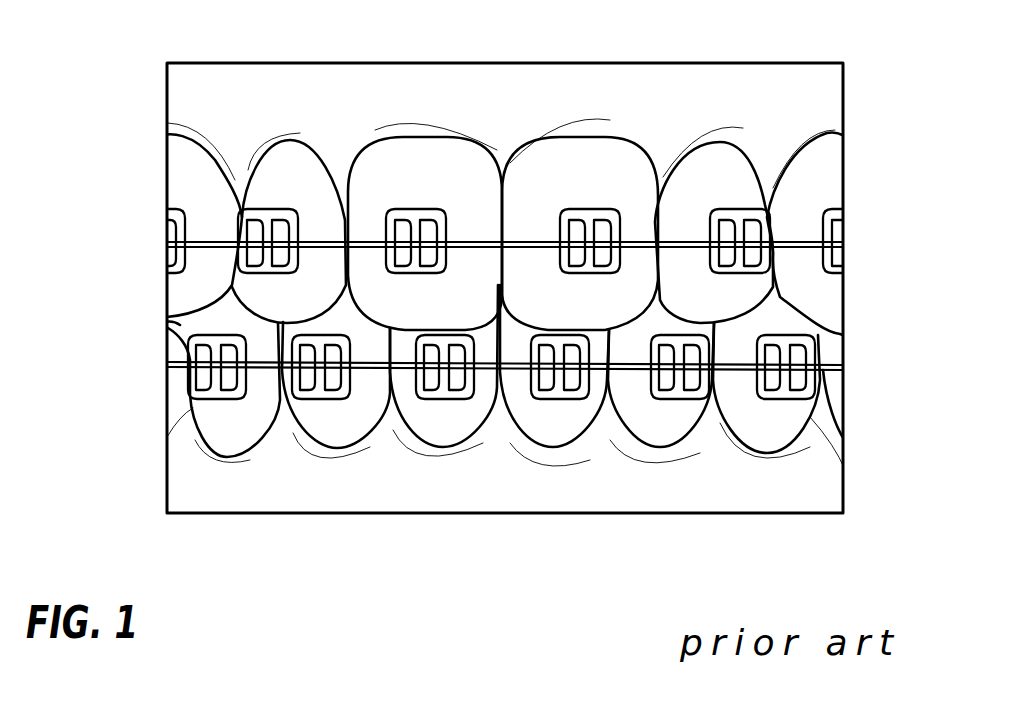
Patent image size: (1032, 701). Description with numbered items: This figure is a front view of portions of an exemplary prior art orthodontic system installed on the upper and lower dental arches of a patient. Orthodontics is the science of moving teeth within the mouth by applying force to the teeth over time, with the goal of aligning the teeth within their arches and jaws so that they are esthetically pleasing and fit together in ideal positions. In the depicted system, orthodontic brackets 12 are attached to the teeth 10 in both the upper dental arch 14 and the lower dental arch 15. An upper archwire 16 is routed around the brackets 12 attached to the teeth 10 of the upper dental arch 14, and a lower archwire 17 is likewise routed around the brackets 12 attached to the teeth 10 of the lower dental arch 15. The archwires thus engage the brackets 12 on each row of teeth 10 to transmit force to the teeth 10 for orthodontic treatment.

The teeth 10 is at (267, 153).
The orthodontic brackets 12 is at (273, 209).
The upper dental arch 14 is at (137, 197).
The lower dental arch 15 is at (137, 388).
The upper archwire 16 is at (792, 242).
The lower archwire 17 is at (747, 380).